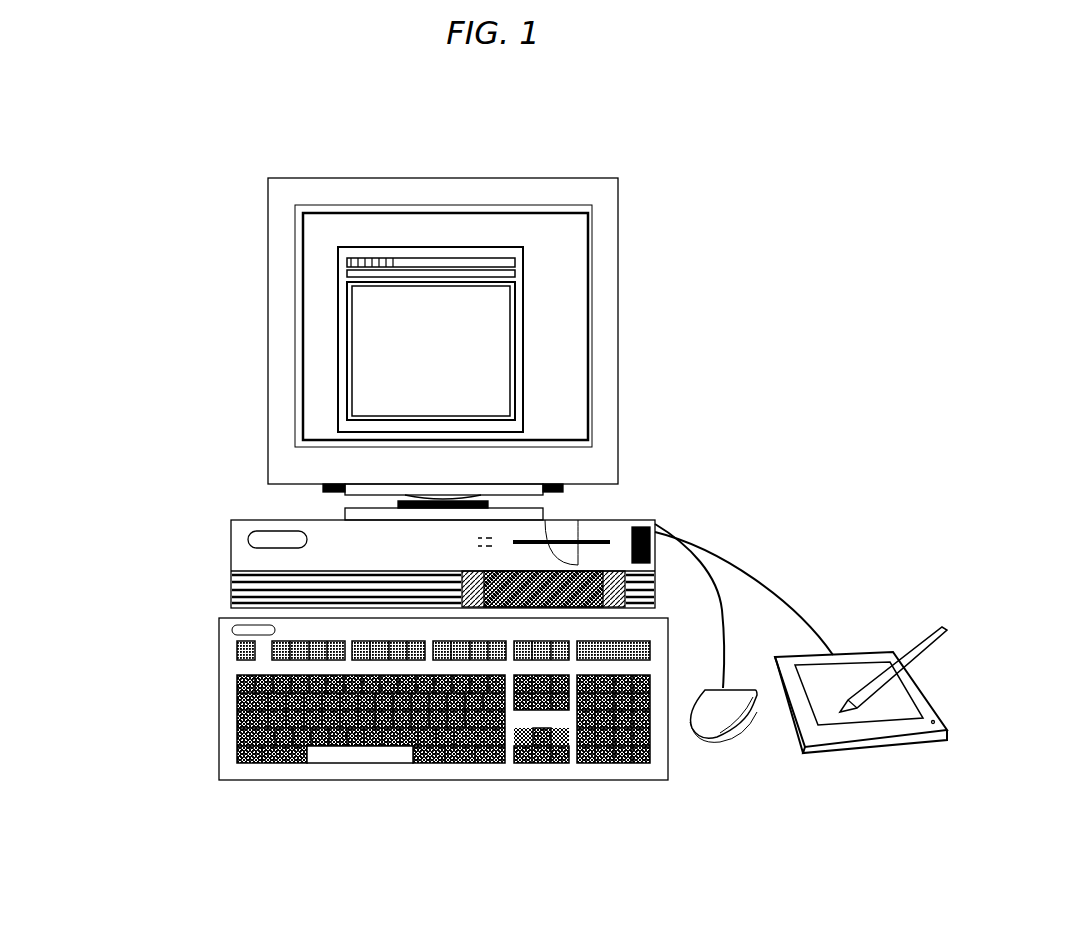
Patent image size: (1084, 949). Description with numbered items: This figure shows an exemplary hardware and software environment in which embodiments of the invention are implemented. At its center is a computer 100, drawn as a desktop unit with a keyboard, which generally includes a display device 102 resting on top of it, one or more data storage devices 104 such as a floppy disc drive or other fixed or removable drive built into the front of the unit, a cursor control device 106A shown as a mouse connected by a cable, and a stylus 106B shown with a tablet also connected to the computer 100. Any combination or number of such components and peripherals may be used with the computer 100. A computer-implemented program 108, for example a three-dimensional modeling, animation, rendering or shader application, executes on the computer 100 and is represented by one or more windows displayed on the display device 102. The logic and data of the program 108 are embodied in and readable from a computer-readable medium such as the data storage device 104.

The computer 100 is at (232, 539).
The display device 102 is at (596, 176).
The data storage device 104 is at (596, 538).
The cursor control device 106A is at (723, 757).
The stylus 106B is at (880, 757).
The computer-implemented program 108 is at (525, 334).